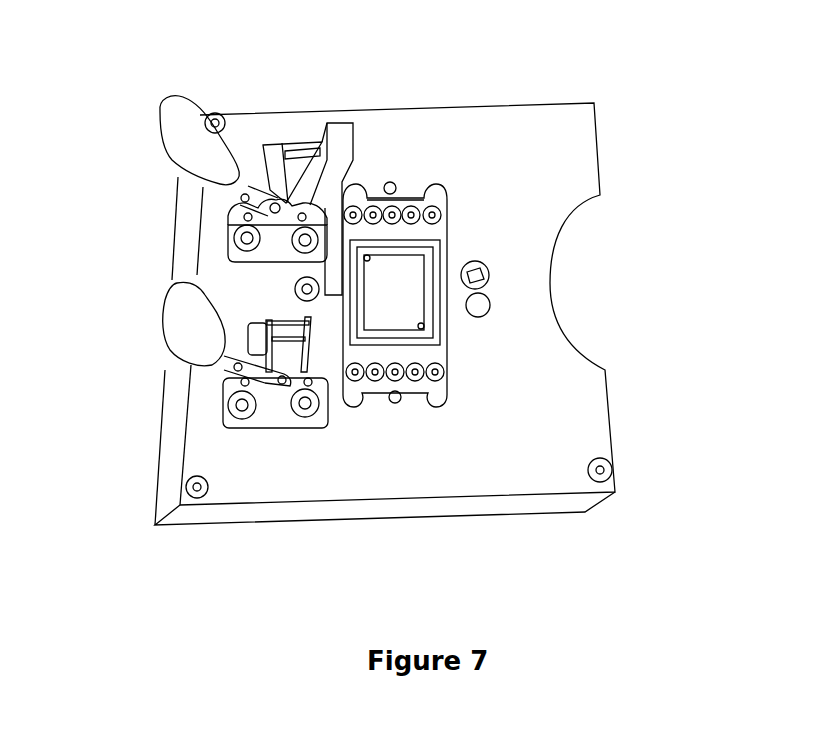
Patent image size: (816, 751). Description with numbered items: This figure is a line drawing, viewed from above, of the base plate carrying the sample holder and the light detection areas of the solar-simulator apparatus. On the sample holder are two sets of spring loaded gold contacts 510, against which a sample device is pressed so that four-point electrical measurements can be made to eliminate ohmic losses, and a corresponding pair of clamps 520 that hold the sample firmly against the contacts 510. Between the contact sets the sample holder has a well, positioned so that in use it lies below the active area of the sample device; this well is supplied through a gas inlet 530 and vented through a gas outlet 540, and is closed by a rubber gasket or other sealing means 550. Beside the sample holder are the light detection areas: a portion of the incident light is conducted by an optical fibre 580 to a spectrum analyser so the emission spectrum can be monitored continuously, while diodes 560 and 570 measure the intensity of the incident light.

The spring loaded gold contacts 510 is at (368, 380).
The clamps 520 is at (297, 143).
The gas inlet 530 is at (364, 257).
The gas outlet 540 is at (423, 327).
The rubber gasket or other sealing means 550 is at (447, 345).
The diode 560 is at (490, 266).
The diode 570 is at (494, 297).
The optical fibre 580 is at (295, 291).